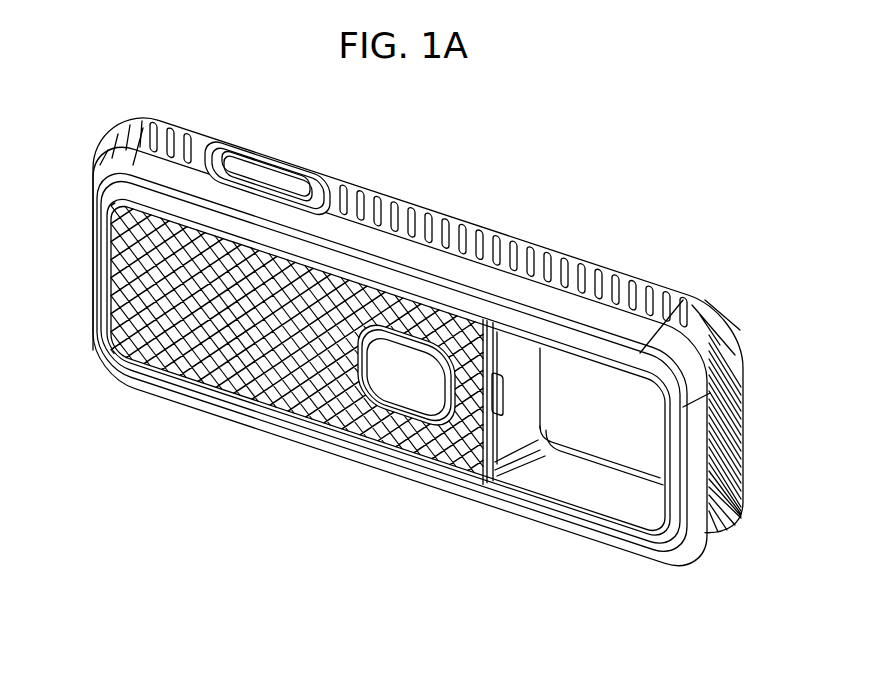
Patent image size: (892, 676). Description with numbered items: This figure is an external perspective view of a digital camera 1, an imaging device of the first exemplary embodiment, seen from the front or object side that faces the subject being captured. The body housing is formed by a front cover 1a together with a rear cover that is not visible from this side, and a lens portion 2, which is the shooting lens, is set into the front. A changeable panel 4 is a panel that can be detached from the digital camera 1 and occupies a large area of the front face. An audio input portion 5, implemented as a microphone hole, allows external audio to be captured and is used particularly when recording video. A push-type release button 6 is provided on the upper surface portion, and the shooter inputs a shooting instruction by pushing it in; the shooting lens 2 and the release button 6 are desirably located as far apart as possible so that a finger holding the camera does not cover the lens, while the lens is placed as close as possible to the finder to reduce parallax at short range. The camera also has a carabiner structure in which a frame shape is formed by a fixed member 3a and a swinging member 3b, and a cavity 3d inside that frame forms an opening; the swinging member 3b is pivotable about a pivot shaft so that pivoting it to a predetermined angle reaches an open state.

The digital camera 1 is at (499, 152).
The front cover 1a is at (362, 243).
The lens portion 2 is at (385, 398).
The fixed member 3a is at (520, 340).
The swinging member 3b is at (590, 522).
The cavity 3d is at (565, 437).
The changeable panel 4 is at (217, 368).
The audio input portion 5 is at (433, 212).
The release button 6 is at (277, 165).